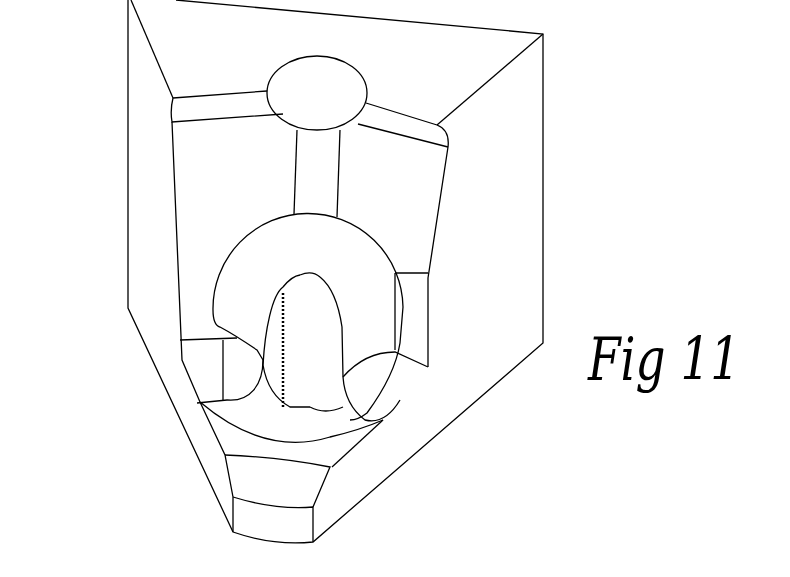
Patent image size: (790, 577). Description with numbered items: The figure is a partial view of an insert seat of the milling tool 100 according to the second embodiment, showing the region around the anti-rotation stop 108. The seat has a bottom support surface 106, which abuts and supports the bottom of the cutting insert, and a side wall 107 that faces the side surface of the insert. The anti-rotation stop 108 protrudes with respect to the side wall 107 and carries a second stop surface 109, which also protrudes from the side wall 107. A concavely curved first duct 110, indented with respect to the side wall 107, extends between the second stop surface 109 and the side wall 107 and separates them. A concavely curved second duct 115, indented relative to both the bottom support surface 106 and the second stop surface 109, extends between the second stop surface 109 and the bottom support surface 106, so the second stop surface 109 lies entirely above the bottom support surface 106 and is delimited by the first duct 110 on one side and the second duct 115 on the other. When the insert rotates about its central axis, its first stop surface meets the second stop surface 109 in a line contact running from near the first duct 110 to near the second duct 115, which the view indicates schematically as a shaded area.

The insert body 100 is at (147, 175).
The first duct 110 is at (261, 250).
The side wall 107 is at (413, 283).
The anti-rotation stop 108 is at (302, 296).
The second stop surface 109 is at (323, 308).
The bottom support surface 106 is at (235, 443).
The second duct 115 is at (320, 418).